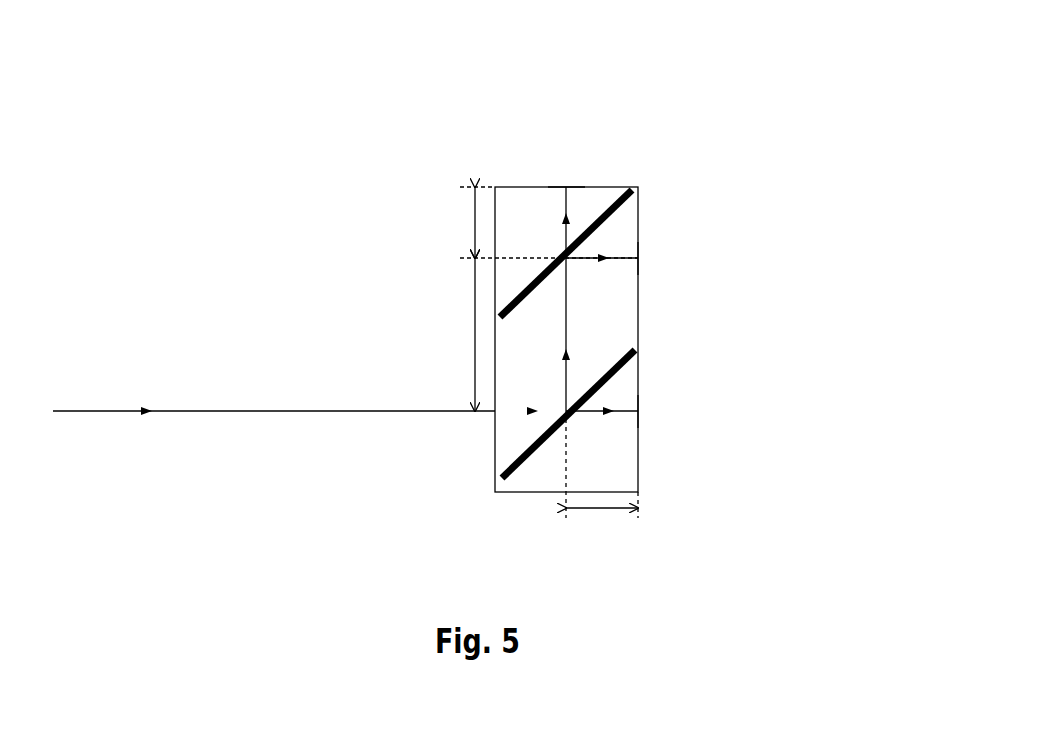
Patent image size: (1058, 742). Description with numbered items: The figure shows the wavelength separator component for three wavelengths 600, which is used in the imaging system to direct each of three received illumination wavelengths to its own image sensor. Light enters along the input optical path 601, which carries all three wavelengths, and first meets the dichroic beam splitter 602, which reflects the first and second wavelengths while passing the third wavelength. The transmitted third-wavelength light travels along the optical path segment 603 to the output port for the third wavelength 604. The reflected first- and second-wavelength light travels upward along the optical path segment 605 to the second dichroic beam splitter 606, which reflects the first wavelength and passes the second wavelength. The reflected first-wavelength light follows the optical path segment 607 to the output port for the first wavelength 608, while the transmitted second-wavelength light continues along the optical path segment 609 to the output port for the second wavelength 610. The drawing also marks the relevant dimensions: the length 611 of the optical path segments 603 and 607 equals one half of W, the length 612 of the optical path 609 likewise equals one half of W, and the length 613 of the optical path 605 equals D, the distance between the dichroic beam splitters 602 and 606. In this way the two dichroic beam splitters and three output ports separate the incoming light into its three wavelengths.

The wavelength separator component for three wavelengths 600 is at (446, 152).
The input optical path 601 is at (274, 441).
The dichroic beam splitter 602 is at (522, 443).
The optical path segment 603 is at (582, 441).
The output port for λ3 604 is at (640, 412).
The optical path segment 605 is at (528, 334).
The dichroic beam splitter 606 is at (523, 278).
The optical path segment 607 is at (602, 288).
The output port for λ1 608 is at (645, 259).
The optical path segment 609 is at (540, 222).
The output port for λ2 610 is at (567, 181).
The length of optical path segments 611 is at (603, 518).
The length of optical path 612 is at (465, 223).
The length of optical path 613 is at (468, 344).